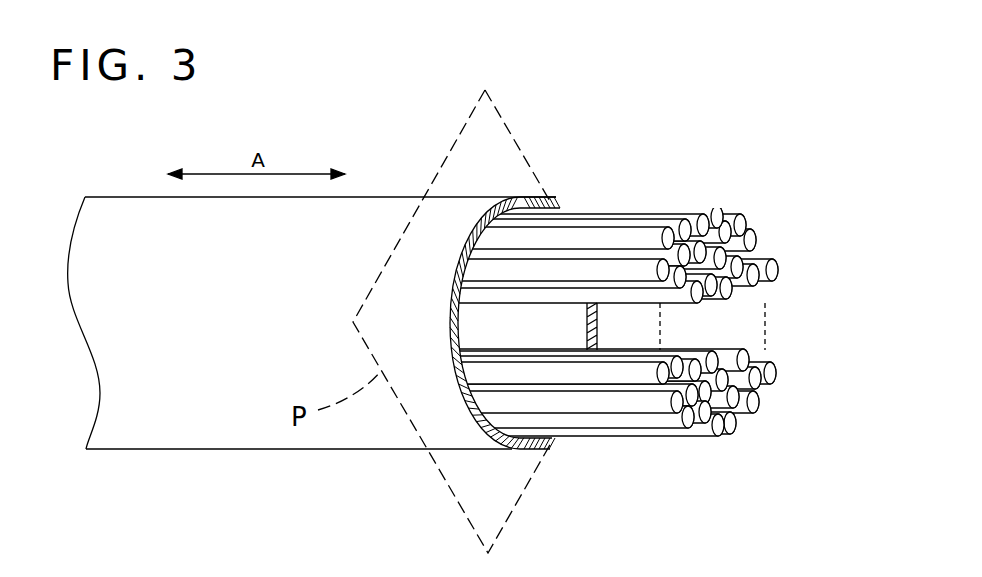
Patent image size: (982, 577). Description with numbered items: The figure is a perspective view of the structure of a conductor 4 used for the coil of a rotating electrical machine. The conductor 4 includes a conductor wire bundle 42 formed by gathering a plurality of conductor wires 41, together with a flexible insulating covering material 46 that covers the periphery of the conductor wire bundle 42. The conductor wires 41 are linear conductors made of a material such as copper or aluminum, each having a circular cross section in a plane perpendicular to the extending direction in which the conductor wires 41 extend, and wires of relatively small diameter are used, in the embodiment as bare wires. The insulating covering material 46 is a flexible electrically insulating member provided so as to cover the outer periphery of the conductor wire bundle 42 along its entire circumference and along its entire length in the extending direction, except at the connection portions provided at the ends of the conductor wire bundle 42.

The conductor 4 is at (198, 464).
The conductor wire 41 is at (628, 207).
The conductor wire bundle 42 is at (659, 316).
The insulating covering material 46 is at (528, 197).